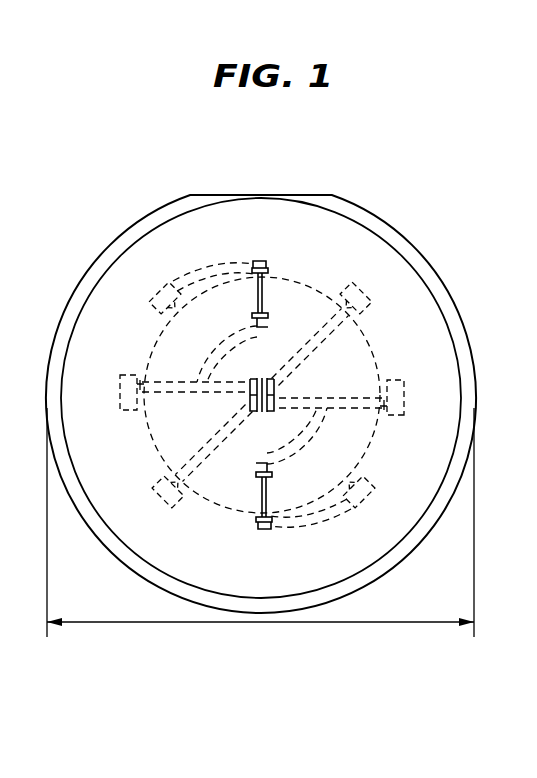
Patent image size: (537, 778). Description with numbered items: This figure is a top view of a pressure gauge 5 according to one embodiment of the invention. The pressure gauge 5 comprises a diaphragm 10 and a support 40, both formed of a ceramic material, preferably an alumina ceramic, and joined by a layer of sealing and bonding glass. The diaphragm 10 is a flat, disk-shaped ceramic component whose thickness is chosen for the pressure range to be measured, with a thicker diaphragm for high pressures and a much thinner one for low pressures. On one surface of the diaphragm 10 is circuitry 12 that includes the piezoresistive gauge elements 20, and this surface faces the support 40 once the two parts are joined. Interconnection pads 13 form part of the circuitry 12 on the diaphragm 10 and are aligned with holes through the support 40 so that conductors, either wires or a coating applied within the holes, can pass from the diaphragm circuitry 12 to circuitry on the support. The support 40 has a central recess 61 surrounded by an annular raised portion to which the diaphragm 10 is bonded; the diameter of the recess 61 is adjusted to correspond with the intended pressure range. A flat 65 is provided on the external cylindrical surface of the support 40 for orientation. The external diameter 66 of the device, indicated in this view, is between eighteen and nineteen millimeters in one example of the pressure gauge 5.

The pressure gauge 5 is at (96, 170).
The diaphragm 10 is at (350, 228).
The circuitry 12 is at (202, 250).
The interconnection pads 13 is at (170, 290).
The piezoresistive gauge elements 20 is at (268, 289).
The support 40 is at (403, 240).
The central recess 61 is at (374, 312).
The flat 65 is at (267, 195).
The external diameter 66 is at (325, 623).